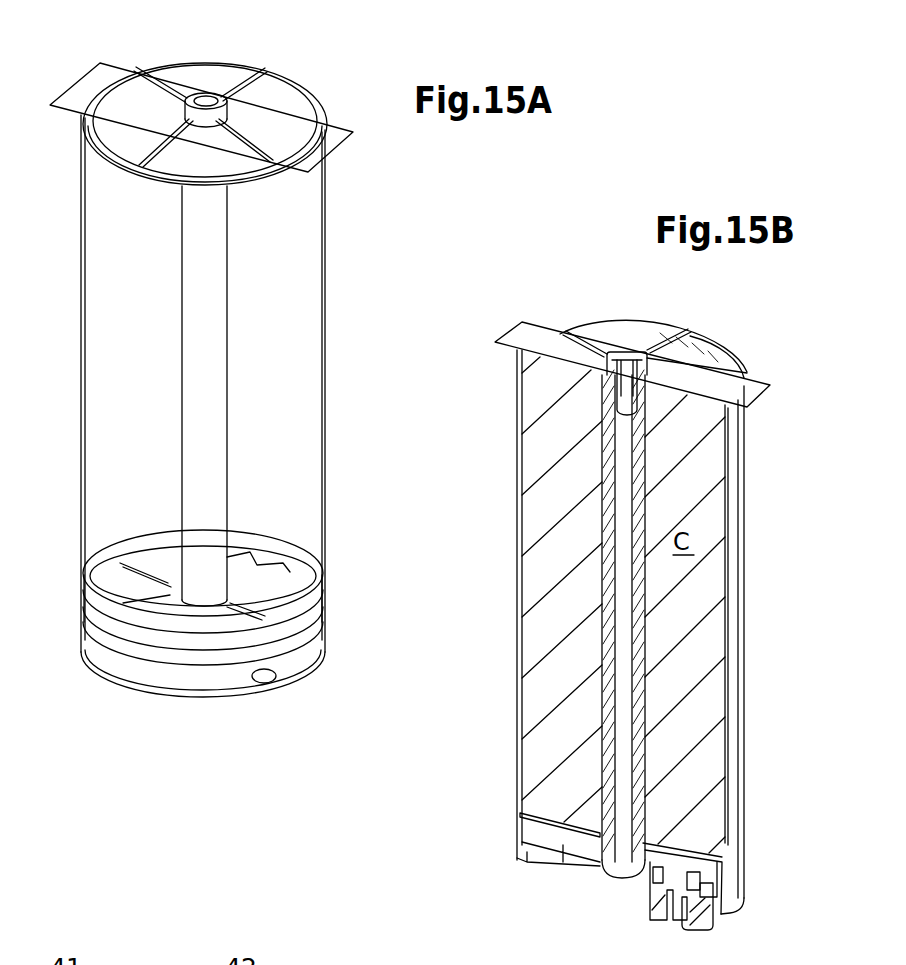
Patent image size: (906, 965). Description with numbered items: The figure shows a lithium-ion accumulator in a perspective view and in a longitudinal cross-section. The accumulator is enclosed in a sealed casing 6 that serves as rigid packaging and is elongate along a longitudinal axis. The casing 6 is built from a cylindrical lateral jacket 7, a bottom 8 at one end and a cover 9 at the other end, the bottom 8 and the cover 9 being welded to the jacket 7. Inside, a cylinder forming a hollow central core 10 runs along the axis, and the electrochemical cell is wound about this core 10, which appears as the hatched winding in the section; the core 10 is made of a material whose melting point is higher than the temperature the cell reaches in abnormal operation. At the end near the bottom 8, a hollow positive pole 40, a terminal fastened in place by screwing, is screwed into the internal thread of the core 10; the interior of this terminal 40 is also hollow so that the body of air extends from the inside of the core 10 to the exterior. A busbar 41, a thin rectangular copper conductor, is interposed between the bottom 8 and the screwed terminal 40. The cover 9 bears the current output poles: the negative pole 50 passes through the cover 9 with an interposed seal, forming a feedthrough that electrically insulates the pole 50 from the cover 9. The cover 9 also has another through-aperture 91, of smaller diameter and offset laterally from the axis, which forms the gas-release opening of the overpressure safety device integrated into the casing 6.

In FIG. 15A, the sealed casing 6 is at (105, 255).
In FIG. 15B, the cylindrical lateral jacket 7 is at (733, 614).
In FIG. 15B, the bottom 8 is at (697, 347).
In FIG. 15B, the cover 9 is at (543, 845).
In FIG. 15B, the hollow central core 10 is at (603, 462).
In FIG. 15A, the positive pole (terminal fastened in place by screwing) 40 is at (203, 98).
In FIG. 15B, the positive pole (terminal fastened in place by screwing) 40 is at (627, 350).
In FIG. 15A, the busbar 41 is at (280, 133).
In FIG. 15B, the busbar 41 is at (752, 387).
In FIG. 15A, the negative pole 50 is at (281, 690).
In FIG. 15B, the negative pole 50 is at (657, 912).
In FIG. 15B, the through-aperture 91 is at (560, 822).